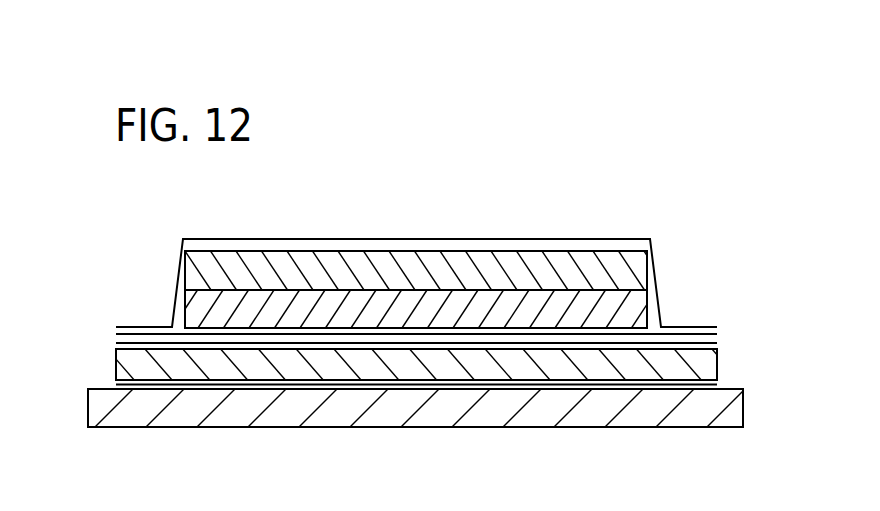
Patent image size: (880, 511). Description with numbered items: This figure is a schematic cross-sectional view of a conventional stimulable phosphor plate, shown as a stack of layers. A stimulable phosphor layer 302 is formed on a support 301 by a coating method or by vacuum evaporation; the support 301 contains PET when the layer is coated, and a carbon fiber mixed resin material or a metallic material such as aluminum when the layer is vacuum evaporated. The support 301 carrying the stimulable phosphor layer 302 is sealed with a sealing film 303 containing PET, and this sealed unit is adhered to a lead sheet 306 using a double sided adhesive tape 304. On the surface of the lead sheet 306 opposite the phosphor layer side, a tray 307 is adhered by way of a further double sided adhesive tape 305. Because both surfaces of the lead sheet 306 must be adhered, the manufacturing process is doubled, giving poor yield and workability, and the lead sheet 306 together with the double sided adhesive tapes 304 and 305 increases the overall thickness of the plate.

The support 301 is at (200, 308).
The stimulable phosphor layer 302 is at (423, 272).
The sealing film 303 is at (660, 306).
The double sided adhesive tape 304 is at (116, 343).
The double sided adhesive tape 305 is at (120, 384).
The lead sheet 306 is at (705, 365).
The tray 307 is at (440, 413).